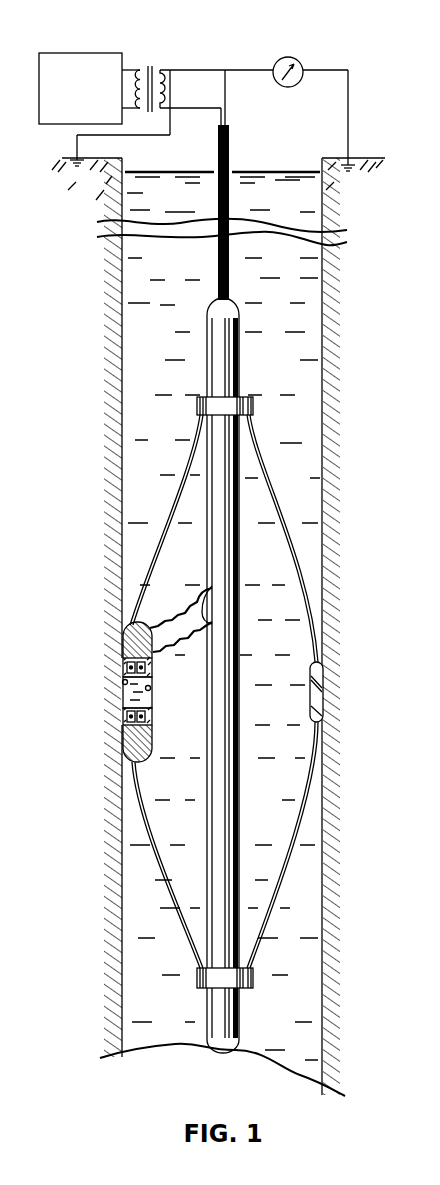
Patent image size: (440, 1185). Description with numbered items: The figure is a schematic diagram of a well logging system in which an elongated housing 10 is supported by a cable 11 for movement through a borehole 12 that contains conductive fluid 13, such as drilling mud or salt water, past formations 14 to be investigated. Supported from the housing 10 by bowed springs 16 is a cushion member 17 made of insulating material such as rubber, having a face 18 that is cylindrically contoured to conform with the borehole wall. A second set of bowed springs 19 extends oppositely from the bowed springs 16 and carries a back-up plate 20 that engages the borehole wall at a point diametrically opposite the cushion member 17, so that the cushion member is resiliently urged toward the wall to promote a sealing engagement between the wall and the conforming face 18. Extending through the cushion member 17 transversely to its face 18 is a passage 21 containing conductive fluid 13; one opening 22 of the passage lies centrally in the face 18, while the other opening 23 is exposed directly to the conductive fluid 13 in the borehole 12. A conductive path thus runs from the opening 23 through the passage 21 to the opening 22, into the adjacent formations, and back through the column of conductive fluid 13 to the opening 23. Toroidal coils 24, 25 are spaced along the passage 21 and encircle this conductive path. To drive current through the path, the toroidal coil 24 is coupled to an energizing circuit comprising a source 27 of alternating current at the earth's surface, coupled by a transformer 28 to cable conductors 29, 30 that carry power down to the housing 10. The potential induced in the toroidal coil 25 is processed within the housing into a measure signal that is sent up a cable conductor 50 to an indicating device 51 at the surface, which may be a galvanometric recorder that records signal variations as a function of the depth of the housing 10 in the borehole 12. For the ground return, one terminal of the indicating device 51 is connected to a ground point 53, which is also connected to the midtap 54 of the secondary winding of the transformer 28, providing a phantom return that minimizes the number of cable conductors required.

The source of alternating current 27 is at (55, 53).
The transformer 28 is at (149, 64).
The cable conductor 30 is at (180, 70).
The midtap of the secondary winding 54 is at (165, 88).
The cable conductor 50 is at (258, 70).
The indicating device 51 is at (300, 82).
The cable conductor 29 is at (216, 117).
The ground point 53 is at (82, 173).
The borehole 12 is at (322, 332).
The formations 14 is at (94, 545).
The conductive fluid 13 is at (158, 334).
The cable 11 is at (217, 255).
The elongated housing 10 is at (240, 822).
The bowed springs 16 is at (167, 512).
The second set of bowed springs 19 is at (283, 508).
The cushion member 17 is at (143, 617).
The face 18 is at (123, 652).
The toroidal coil 24 is at (127, 668).
The toroidal coil 25 is at (152, 668).
The passage 21 is at (152, 697).
The opening 22 is at (123, 683).
The opening 23 is at (151, 688).
The back-up plate 20 is at (310, 700).